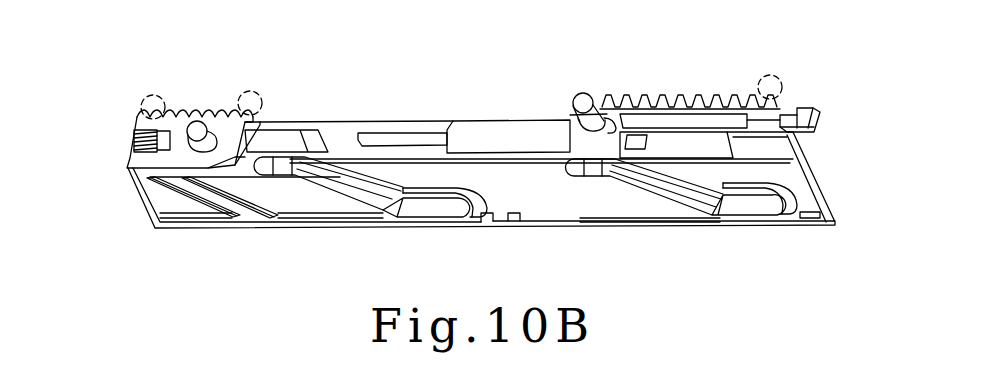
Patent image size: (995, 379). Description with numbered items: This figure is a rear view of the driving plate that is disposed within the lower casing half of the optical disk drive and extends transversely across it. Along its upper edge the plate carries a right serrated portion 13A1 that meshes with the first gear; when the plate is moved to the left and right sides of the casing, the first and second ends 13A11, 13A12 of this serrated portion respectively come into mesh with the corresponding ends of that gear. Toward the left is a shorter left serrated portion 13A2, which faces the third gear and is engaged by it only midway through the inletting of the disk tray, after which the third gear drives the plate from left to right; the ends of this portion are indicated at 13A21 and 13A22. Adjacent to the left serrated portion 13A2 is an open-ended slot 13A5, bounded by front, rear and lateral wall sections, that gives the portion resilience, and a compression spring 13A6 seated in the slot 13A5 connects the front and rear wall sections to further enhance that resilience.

The right serrated portion 13A1 is at (680, 95).
The first end of the right serrated portion 13A11 is at (775, 75).
The second end of the right serrated portion 13A12 is at (597, 72).
The left serrated portion 13A2 is at (200, 116).
The rack tooth end 13A21 is at (255, 92).
The rack tooth end 13A22 is at (153, 95).
The open-ended slot 13A5 is at (130, 165).
The compression spring 13A6 is at (138, 141).